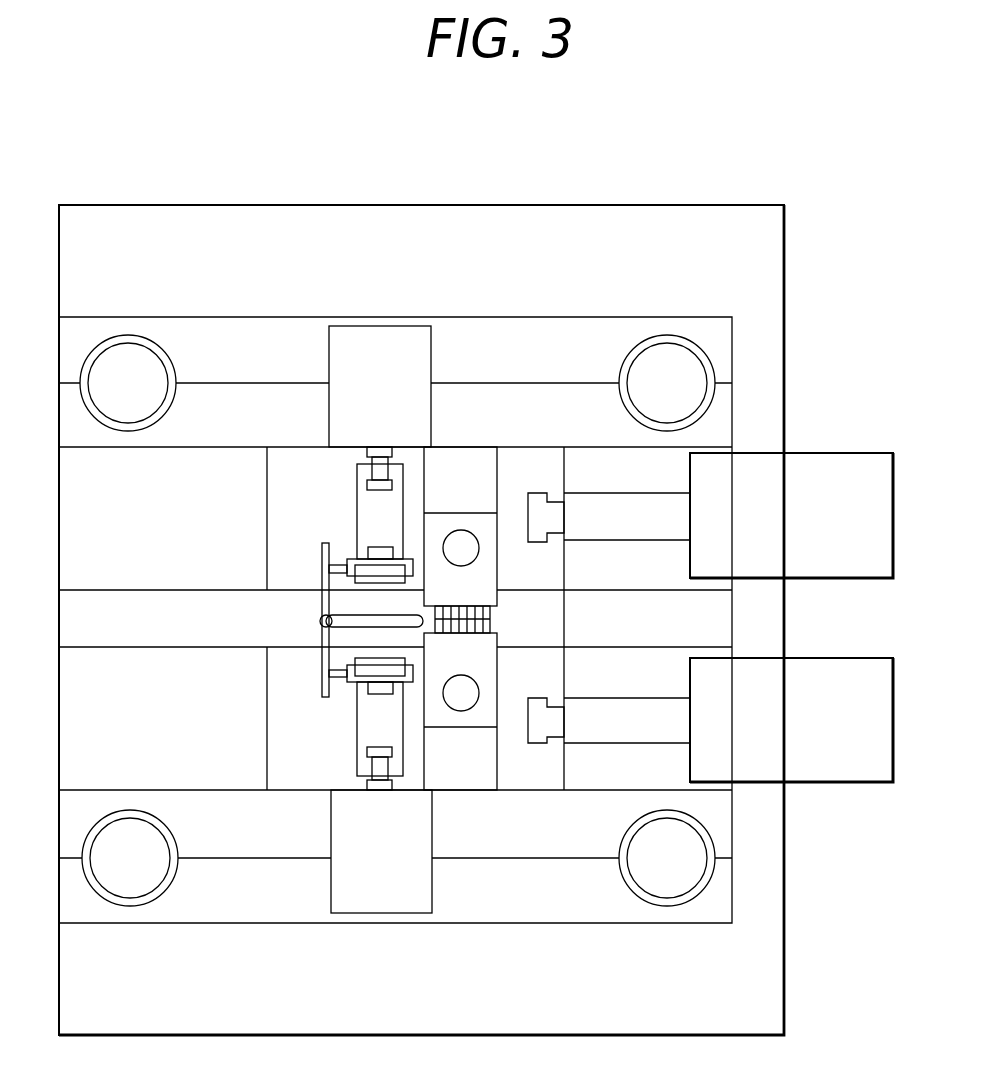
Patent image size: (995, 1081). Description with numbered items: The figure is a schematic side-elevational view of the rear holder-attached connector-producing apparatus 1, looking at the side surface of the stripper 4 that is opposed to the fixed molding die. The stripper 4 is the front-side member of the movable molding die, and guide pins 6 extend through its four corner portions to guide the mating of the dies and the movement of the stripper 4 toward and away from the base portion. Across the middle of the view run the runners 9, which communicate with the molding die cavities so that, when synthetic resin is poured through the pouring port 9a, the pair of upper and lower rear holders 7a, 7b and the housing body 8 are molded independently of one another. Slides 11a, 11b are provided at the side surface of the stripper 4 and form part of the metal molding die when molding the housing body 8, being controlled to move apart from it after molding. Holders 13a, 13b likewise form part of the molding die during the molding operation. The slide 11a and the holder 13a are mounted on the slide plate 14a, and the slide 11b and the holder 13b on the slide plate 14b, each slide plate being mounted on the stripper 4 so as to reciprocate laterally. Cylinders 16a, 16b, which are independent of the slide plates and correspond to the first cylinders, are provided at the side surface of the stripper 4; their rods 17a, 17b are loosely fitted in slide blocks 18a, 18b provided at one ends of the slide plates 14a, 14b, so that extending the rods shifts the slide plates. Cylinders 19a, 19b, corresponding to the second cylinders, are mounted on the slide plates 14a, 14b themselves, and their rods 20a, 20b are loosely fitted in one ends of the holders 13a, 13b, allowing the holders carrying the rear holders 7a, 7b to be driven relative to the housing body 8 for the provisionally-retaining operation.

The production apparatus 1 is at (830, 229).
The stripper 4 is at (451, 238).
The guide pins 6 is at (122, 357).
The rear holder 7a is at (355, 553).
The rear holder 7b is at (352, 688).
The housing body 8 is at (497, 622).
The runners 9 is at (367, 624).
The pouring port 9a is at (318, 621).
The slide 11a is at (459, 552).
The slide 11b is at (465, 722).
The holder 13a is at (378, 520).
The holder 13b is at (378, 728).
The slide plate 14a is at (283, 497).
The slide plate 14b is at (283, 770).
The cylinder 16a is at (771, 533).
The cylinder 16b is at (771, 746).
The rod 17a is at (608, 520).
The rod 17b is at (636, 730).
The slide block 18a is at (543, 475).
The slide block 18b is at (543, 778).
The cylinder 19a is at (365, 388).
The cylinder 19b is at (363, 877).
The rod 20a is at (381, 470).
The rod 20b is at (384, 772).